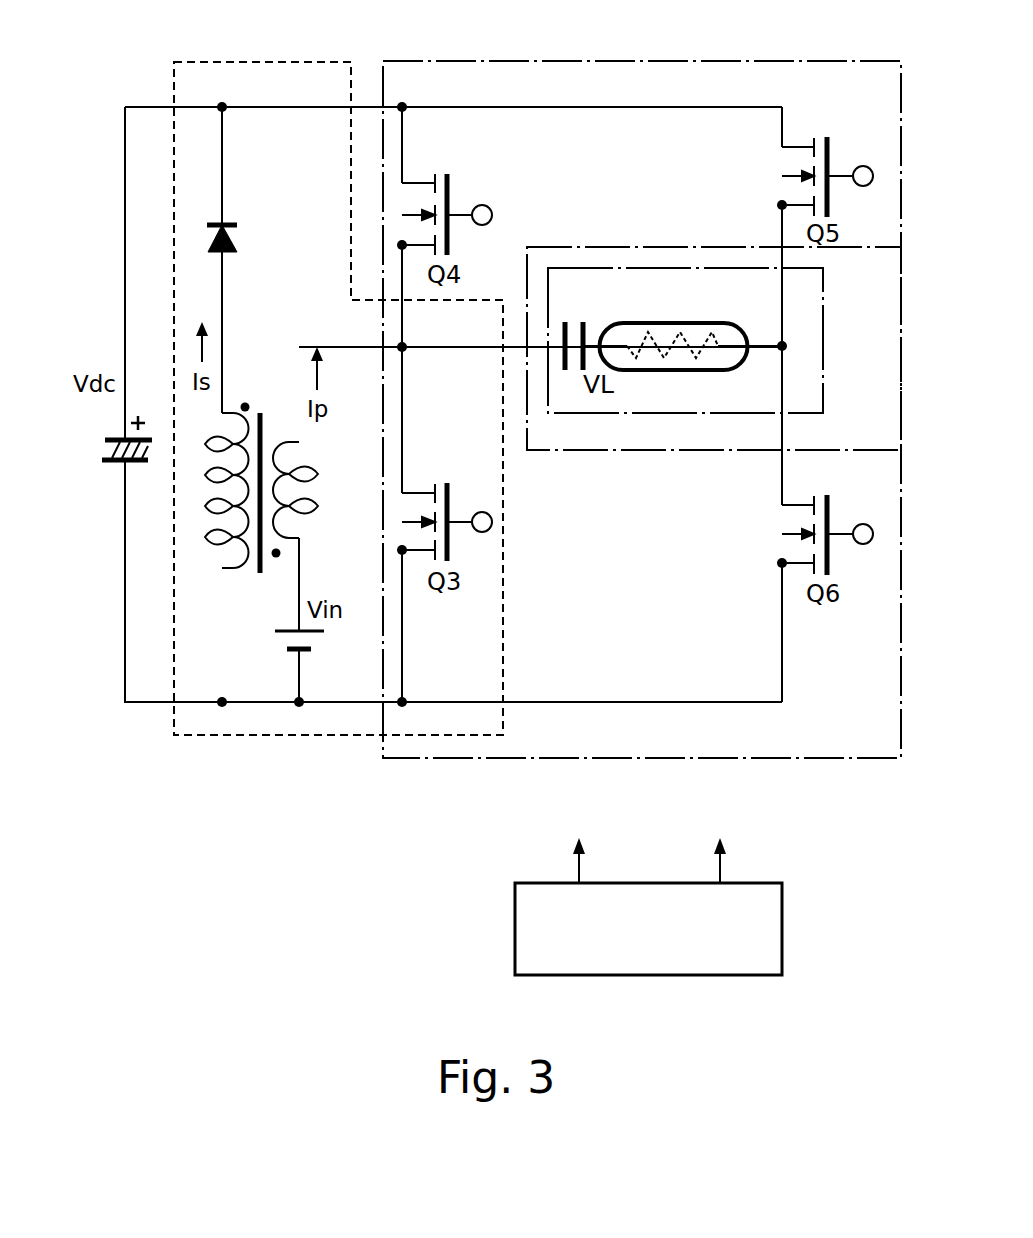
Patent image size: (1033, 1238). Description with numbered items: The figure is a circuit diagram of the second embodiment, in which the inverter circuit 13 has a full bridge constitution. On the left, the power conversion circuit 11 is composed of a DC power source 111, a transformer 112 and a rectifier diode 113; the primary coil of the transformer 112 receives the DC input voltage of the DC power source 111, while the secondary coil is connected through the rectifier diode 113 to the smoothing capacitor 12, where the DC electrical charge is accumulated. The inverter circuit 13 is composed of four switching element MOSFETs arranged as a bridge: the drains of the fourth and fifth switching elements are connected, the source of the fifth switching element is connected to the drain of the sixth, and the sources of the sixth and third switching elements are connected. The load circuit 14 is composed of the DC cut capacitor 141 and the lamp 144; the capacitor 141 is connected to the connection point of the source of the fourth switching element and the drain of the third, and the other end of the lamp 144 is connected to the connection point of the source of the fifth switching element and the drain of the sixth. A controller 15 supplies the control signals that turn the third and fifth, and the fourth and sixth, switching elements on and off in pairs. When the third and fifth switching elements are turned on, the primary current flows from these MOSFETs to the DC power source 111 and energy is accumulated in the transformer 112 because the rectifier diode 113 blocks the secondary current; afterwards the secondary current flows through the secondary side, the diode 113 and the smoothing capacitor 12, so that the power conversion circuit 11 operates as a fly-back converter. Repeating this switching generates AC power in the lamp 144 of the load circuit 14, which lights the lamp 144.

The power conversion circuit 11 is at (268, 61).
The smoothing capacitor 12 is at (100, 446).
The inverter circuit 13 is at (634, 61).
The load circuit 14 is at (824, 302).
The controller 15 is at (782, 925).
The DC power source 111 is at (316, 637).
The transformer 112 is at (261, 404).
The rectifier diode 113 is at (235, 237).
The DC cut capacitor 141 is at (576, 321).
The lamp 144 is at (669, 322).